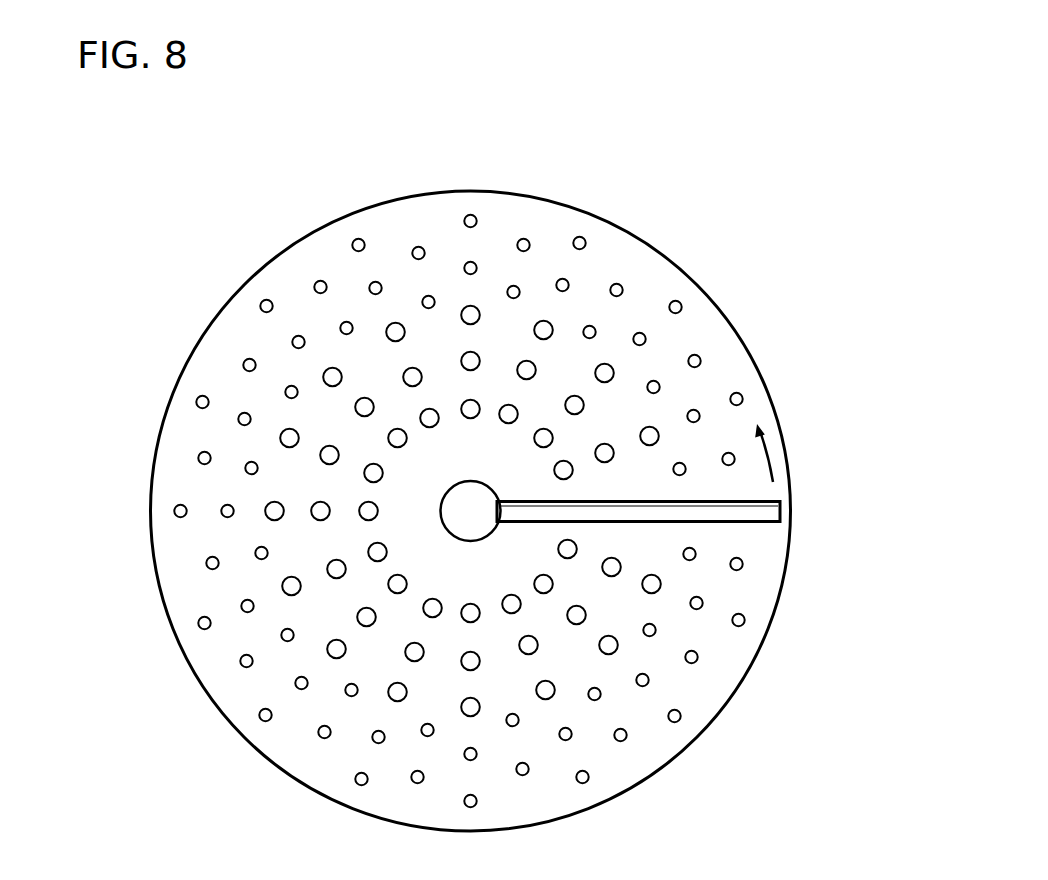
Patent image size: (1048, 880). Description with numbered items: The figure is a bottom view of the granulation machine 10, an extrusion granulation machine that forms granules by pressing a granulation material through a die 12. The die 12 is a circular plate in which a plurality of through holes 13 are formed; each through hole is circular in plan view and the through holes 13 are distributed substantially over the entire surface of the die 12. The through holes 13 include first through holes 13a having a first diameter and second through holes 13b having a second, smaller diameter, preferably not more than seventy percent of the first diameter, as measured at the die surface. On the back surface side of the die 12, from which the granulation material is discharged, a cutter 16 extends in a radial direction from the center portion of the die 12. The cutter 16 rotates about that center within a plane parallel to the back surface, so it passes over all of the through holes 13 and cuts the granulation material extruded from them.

The granulation machine 10 is at (648, 155).
The die 12 is at (213, 353).
The through holes 13 is at (930, 205).
The first through holes 13a is at (620, 373).
The second through holes 13b is at (703, 355).
The cutter 16 is at (750, 516).